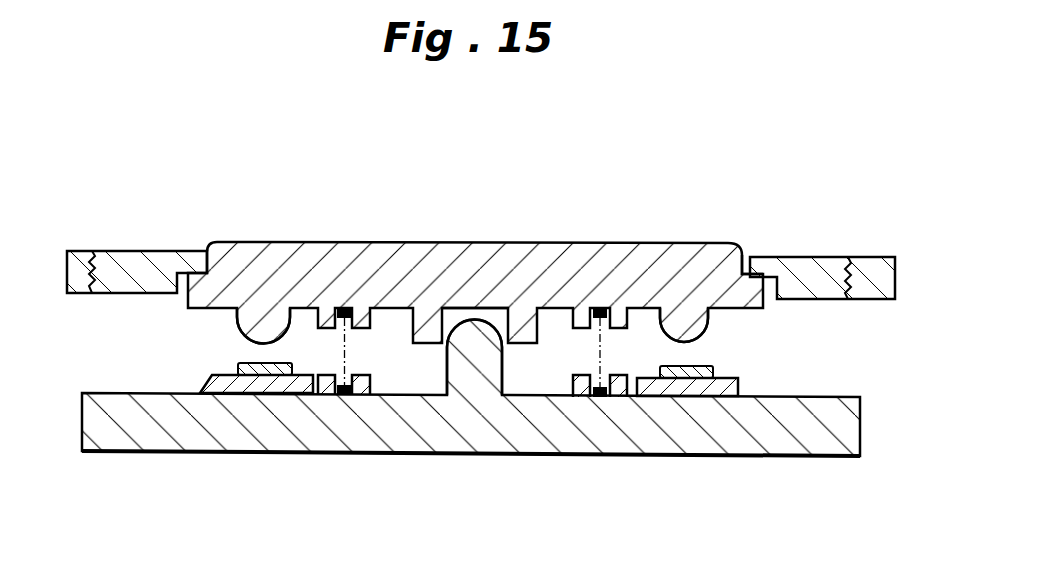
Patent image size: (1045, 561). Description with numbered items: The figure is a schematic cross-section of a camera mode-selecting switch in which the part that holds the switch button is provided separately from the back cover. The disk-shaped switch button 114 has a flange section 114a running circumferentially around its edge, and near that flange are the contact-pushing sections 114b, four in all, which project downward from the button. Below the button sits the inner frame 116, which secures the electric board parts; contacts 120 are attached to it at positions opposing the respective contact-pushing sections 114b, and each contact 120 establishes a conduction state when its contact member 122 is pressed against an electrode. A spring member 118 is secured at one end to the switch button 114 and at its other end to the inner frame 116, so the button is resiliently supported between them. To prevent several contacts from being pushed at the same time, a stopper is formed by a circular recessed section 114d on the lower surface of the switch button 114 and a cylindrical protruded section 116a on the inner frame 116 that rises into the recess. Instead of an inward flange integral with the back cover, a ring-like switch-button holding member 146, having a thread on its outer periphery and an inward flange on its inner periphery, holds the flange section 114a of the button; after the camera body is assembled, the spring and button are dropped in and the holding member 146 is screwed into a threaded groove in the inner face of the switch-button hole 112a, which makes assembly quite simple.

The switch-button hole 112a is at (748, 272).
The switch button 114 is at (310, 244).
The flange section 114a is at (780, 287).
The contact-pushing sections 114b is at (270, 335).
The circular recessed section 114d is at (480, 307).
The inner frame 116 is at (405, 440).
The cylindrical protruded section 116a is at (478, 350).
The spring member 118 is at (352, 318).
The contacts 120 is at (228, 392).
The contact member 122 is at (252, 371).
The switch-button holding member 146 is at (155, 250).